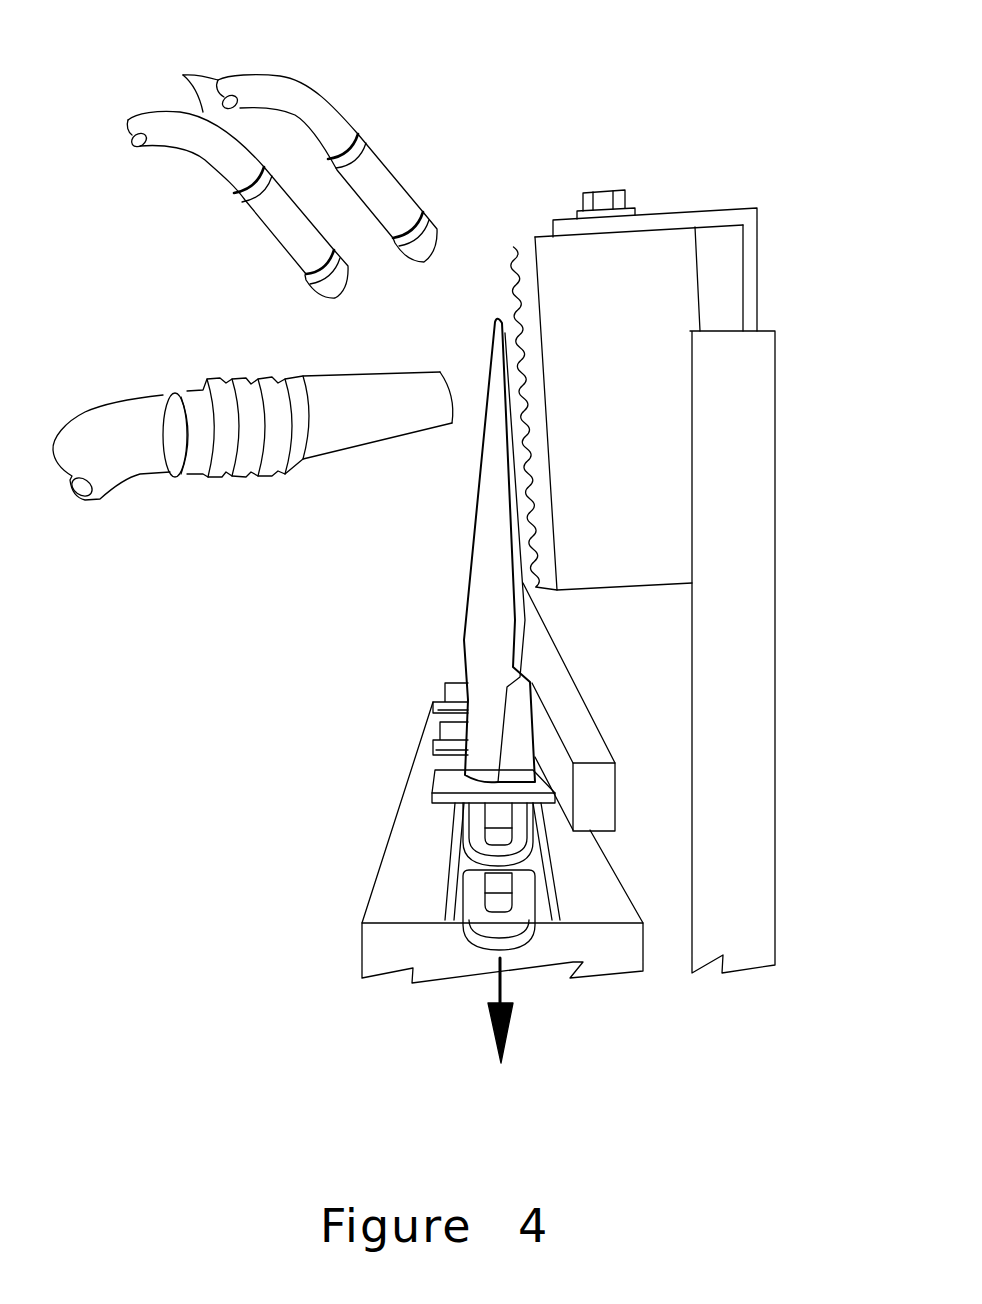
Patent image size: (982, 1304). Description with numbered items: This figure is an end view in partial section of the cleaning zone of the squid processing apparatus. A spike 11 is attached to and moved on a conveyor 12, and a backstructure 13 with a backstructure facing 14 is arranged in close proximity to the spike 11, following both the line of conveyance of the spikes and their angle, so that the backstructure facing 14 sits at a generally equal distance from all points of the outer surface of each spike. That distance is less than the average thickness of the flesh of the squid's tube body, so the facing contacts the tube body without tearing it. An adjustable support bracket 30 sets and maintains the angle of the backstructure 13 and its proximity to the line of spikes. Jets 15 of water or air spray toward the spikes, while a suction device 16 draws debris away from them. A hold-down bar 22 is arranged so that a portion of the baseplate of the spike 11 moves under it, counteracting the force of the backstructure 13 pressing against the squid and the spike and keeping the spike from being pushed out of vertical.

The spike 11 is at (466, 650).
The conveyor 12 is at (470, 898).
The backstructure 13 is at (667, 252).
The backstructure facing 14 is at (535, 247).
The jets 15 is at (183, 75).
The suction device 16 is at (180, 383).
The hold-down bar 22 is at (588, 783).
The adjustable support bracket 30 is at (707, 217).